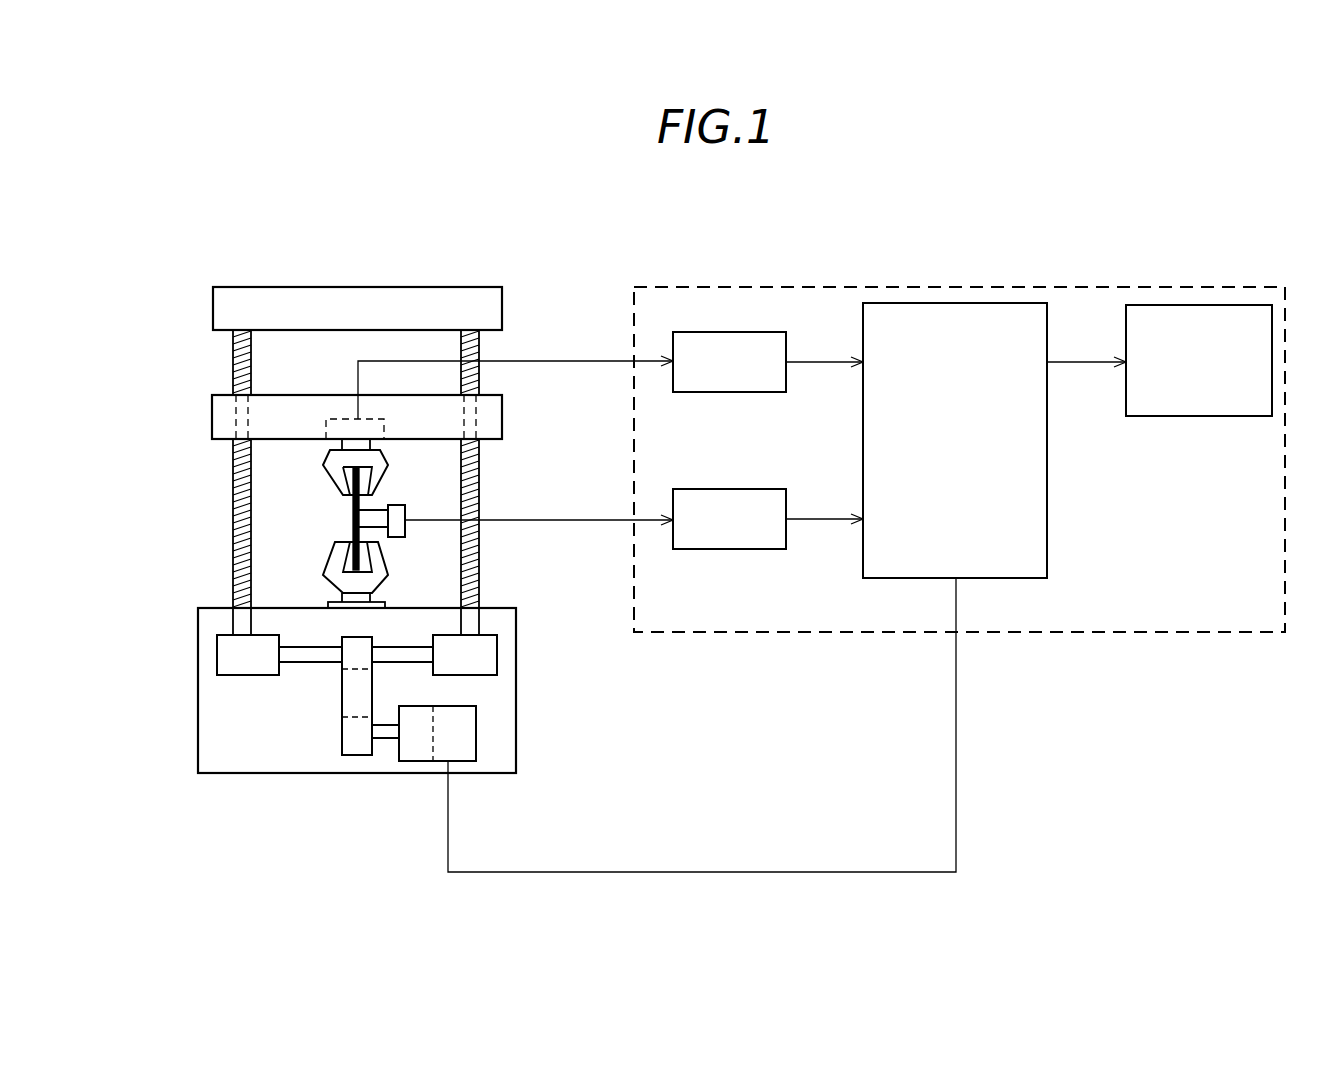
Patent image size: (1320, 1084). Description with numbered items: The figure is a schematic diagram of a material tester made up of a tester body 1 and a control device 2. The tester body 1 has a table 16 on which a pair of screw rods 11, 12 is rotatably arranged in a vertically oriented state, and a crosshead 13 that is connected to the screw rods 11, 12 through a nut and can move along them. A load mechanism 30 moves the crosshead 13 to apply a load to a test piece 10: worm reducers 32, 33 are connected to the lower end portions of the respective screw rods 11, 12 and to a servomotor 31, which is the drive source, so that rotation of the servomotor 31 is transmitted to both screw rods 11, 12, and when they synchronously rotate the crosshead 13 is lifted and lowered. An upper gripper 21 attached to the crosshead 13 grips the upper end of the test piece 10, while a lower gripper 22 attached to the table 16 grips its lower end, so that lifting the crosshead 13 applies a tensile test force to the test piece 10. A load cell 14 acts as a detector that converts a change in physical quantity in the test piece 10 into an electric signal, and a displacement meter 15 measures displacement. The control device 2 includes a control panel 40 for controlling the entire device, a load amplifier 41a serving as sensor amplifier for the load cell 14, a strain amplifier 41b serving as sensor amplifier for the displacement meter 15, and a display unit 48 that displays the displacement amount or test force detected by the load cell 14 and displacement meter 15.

The tester body 1 is at (393, 272).
The control device 2 is at (860, 287).
The test piece 10 is at (353, 518).
The screw rod 11 is at (235, 563).
The screw rod 12 is at (480, 572).
The crosshead 13 is at (210, 420).
The load cell 14 is at (337, 427).
The displacement meter 15 is at (378, 512).
The table 16 is at (210, 740).
The upper gripper 21 is at (336, 478).
The lower gripper 22 is at (380, 575).
The load mechanism 30 is at (338, 805).
The servomotor 31 is at (462, 733).
The worm reducer 32 is at (255, 665).
The worm reducer 33 is at (483, 656).
The control panel 40 is at (945, 310).
The load amplifier 41a is at (735, 337).
The strain amplifier 41b is at (727, 550).
The display unit 48 is at (1192, 320).